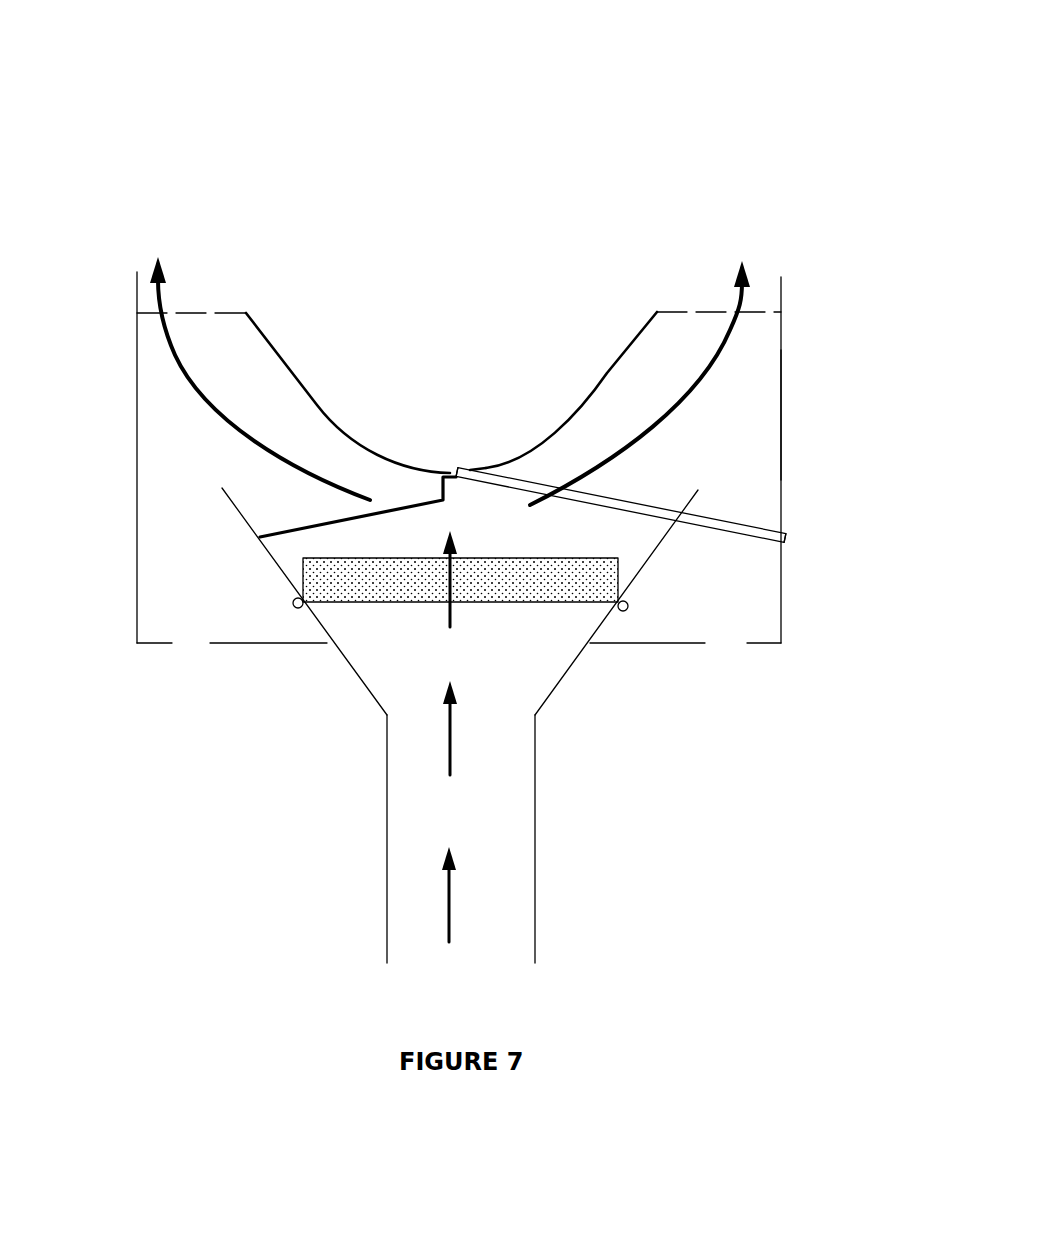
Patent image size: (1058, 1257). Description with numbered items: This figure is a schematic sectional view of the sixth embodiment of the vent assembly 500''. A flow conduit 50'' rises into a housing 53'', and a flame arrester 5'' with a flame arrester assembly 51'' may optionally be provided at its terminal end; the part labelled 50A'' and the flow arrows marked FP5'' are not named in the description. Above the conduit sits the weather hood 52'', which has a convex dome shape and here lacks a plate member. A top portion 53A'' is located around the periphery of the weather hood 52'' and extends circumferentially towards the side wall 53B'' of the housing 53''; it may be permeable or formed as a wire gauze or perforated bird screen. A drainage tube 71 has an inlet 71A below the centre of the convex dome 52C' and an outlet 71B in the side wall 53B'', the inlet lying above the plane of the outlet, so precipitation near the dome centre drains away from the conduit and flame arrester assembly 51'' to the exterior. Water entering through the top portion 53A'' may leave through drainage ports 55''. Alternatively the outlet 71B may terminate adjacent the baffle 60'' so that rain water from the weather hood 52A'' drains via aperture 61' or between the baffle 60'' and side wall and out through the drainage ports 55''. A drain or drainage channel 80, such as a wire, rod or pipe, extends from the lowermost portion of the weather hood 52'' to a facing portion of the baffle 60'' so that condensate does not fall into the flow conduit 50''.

The vent assembly 500'' is at (805, 75).
The weather hood 52'' is at (348, 302).
The top portion 53A'' is at (459, 462).
The weather hood 52A'' is at (589, 324).
The centre of the convex dome 52C' is at (517, 352).
The inlet 71A is at (452, 468).
The housing 53'' is at (529, 449).
The side wall 53B'' is at (841, 414).
The drainage channel 80 is at (317, 527).
The drainage tube 71 is at (750, 528).
The outlet 71B is at (786, 540).
The baffle 60'' is at (236, 516).
The flame arrester assembly 51'' is at (577, 591).
The aperture 61' is at (697, 602).
The drainage ports 55'' is at (455, 684).
The flame arrester 5'' is at (471, 618).
The flow conduit 50'' is at (232, 839).
The duct wall 50A'' is at (715, 839).
The flow path FP5'' is at (337, 814).